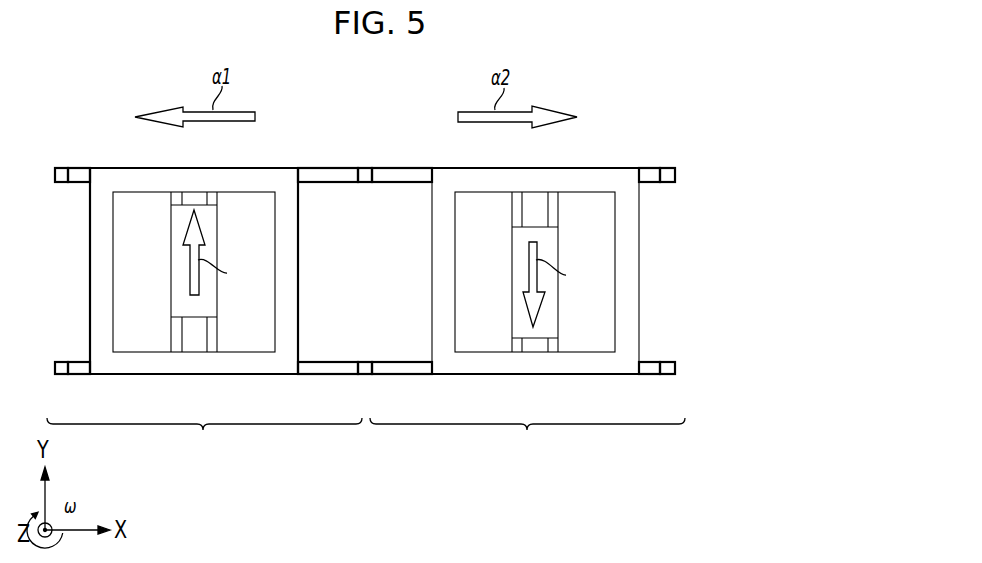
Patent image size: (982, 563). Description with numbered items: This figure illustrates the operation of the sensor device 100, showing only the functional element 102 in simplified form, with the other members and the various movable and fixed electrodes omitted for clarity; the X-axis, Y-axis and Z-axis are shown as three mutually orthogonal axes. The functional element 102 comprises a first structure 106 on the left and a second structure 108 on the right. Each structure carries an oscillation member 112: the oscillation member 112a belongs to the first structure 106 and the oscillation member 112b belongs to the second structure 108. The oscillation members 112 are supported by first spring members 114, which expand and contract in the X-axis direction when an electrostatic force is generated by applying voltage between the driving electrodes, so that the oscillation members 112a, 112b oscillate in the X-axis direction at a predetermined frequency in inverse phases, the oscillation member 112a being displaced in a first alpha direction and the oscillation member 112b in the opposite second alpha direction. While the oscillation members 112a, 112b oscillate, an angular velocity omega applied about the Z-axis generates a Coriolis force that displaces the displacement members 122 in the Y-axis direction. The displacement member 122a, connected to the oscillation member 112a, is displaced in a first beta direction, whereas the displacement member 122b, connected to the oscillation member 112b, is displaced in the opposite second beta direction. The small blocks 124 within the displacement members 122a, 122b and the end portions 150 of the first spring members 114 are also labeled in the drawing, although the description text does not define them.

The sensor device 100 is at (668, 68).
The functional element 102 is at (624, 156).
The first structure 106 is at (206, 320).
The second structure 108 is at (525, 319).
The oscillation member 112 is at (364, 252).
The oscillation member 112a is at (233, 152).
The oscillation member 112b is at (557, 172).
The first spring member 114 is at (78, 170).
The displacement member 122 is at (364, 272).
The displacement member 122a is at (203, 298).
The displacement member 122b is at (522, 248).
The electrode 124 is at (211, 198).
The fixing portion 150 is at (58, 182).